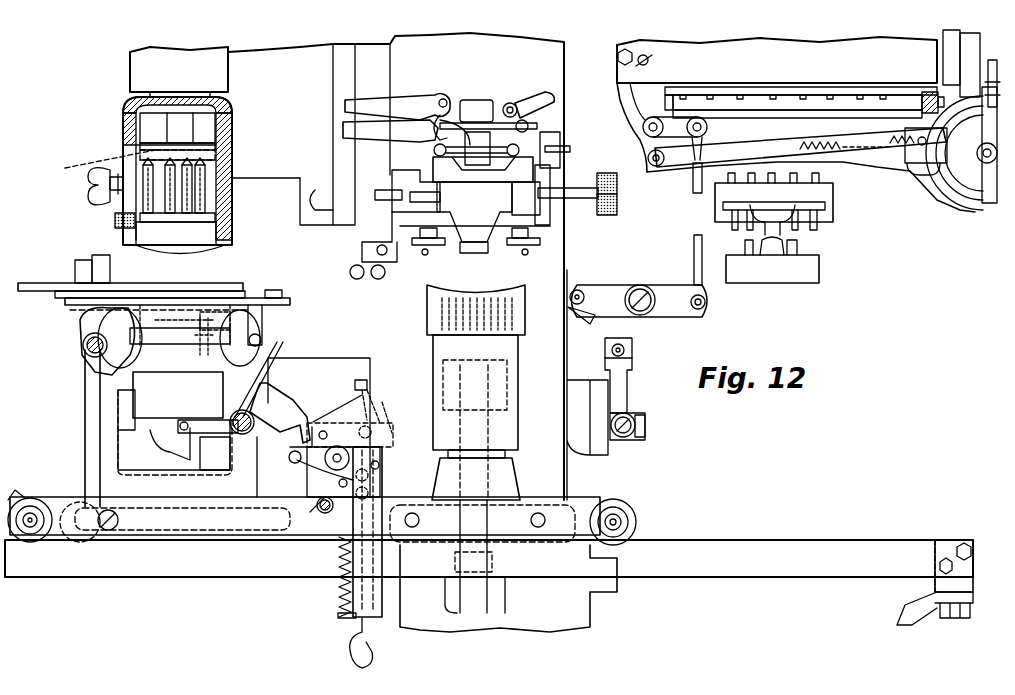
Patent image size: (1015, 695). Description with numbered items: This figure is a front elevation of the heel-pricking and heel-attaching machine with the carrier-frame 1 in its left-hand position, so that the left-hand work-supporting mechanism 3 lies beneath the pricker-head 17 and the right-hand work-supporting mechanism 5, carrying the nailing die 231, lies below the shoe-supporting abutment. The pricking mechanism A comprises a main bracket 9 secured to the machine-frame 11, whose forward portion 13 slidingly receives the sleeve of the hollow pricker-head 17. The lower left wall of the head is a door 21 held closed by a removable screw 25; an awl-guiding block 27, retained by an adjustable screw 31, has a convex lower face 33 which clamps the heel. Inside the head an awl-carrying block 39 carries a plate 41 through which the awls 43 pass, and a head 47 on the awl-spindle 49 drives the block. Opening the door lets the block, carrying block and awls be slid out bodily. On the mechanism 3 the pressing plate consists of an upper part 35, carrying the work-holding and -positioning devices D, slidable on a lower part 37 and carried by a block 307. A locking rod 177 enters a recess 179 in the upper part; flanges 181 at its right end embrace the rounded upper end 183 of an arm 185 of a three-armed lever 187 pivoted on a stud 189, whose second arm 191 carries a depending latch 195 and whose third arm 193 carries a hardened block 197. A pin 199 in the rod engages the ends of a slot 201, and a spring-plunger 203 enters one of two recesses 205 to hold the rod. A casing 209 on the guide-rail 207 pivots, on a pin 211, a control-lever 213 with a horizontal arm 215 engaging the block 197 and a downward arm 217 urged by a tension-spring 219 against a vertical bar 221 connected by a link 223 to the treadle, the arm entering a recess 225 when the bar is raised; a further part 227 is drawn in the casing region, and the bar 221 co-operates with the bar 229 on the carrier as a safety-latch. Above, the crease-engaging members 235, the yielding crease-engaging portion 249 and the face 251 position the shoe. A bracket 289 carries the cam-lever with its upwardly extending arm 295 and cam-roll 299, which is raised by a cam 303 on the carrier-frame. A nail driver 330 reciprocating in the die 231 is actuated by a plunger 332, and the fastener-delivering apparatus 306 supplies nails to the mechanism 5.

The carrier-frame 1 is at (588, 500).
The left-hand work-supporting mechanism 3 is at (108, 437).
The right-hand work-supporting mechanism 5 is at (512, 422).
The main bracket 9 is at (295, 182).
The machine-frame 11 is at (562, 78).
The forward portion of the bracket 13 is at (130, 78).
The pricker-head 17 is at (232, 136).
The door 21 is at (128, 202).
The removable screw 25 is at (110, 200).
The awl-guiding block 27 is at (150, 235).
The adjustable screw 31 is at (118, 223).
The lower face of the block 33 is at (182, 258).
The upper part of the pressing plate 35 is at (70, 298).
The lower part of the pressing plate 37 is at (132, 340).
The awl-carrying block 39 is at (216, 154).
The plate 41 is at (140, 172).
The awl 43 is at (200, 200).
The head 47 is at (98, 163).
The awl-spindle 49 is at (185, 128).
The pricking mechanism A is at (90, 158).
The work-holding and -positioning devices D is at (152, 283).
The locking rod 177 is at (275, 285).
The recess 179 is at (85, 335).
The flanges 181 is at (262, 345).
The rounded upper end 183 is at (255, 318).
The arm 185 is at (226, 392).
The three-armed lever 187 is at (252, 414).
The stud 189 is at (240, 405).
The second arm 191 is at (218, 445).
The third arm 193 is at (268, 445).
The depending latch 195 is at (190, 445).
The hardened block 197 is at (290, 459).
The pin 199 is at (180, 338).
The slot 201 is at (170, 325).
The spring-plunger 203 is at (230, 290).
The recesses 205 is at (210, 350).
The guide-rail 207 is at (280, 578).
The casing 209 is at (382, 602).
The pin 211 is at (337, 420).
The control-lever 213 is at (312, 422).
The horizontal arm 215 is at (307, 423).
The downwardly extending arm 217 is at (312, 512).
The tension-spring 219 is at (352, 450).
The vertical bar 221 is at (356, 406).
The link 223 is at (372, 660).
The recess 225 is at (382, 468).
The pin 227 is at (300, 470).
The bar 229 is at (205, 530).
The nailing die 231 is at (520, 312).
The crease-engaging members 235 is at (520, 253).
The crease-engaging portion 249 is at (478, 242).
The face 251 is at (470, 236).
The bracket 289 is at (600, 402).
The upwardly extending arm 295 is at (618, 388).
The cam-roll 299 is at (636, 440).
The cam 303 is at (345, 480).
The fastener-delivering apparatus 306 is at (785, 223).
The block 307 is at (135, 403).
The nail driver 330 is at (498, 415).
The plunger 332 is at (490, 605).